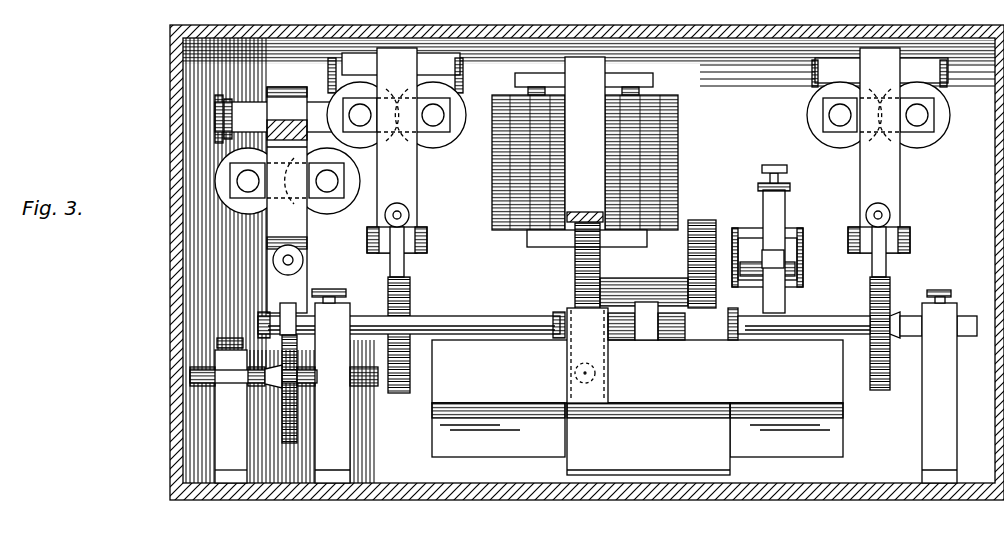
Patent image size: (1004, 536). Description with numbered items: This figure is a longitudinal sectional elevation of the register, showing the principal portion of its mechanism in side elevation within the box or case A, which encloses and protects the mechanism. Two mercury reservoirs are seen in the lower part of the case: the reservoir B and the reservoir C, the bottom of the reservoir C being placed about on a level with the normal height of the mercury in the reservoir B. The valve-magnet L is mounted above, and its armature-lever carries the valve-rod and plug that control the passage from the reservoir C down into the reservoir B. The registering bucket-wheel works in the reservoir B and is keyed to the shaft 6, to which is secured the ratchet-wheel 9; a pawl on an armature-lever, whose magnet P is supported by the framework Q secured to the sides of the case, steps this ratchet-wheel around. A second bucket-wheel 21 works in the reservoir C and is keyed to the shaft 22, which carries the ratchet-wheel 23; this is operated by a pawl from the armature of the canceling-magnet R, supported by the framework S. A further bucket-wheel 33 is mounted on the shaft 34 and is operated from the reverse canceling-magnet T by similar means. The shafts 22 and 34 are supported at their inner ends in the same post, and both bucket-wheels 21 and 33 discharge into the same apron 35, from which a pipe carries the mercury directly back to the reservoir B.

The box or case A is at (167, 297).
The magnet P is at (237, 194).
The framework Q is at (287, 200).
The framework S is at (377, 150).
The canceling-magnet R is at (448, 145).
The reverse canceling-magnet T is at (878, 150).
The valve-magnet L is at (680, 158).
The reservoir C is at (637, 371).
The reservoir B is at (637, 439).
The shaft 6 is at (370, 386).
The ratchet-wheel 9 is at (280, 414).
The bucket-wheel 21 is at (575, 272).
The shaft 22 is at (507, 322).
The ratchet-wheel 23 is at (410, 295).
The bucket-wheel 33 is at (704, 226).
The shaft 34 is at (840, 316).
The apron 35 is at (644, 277).